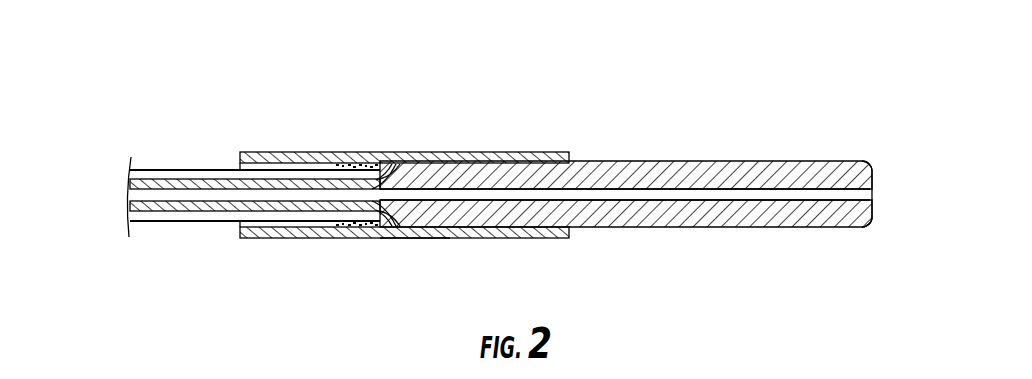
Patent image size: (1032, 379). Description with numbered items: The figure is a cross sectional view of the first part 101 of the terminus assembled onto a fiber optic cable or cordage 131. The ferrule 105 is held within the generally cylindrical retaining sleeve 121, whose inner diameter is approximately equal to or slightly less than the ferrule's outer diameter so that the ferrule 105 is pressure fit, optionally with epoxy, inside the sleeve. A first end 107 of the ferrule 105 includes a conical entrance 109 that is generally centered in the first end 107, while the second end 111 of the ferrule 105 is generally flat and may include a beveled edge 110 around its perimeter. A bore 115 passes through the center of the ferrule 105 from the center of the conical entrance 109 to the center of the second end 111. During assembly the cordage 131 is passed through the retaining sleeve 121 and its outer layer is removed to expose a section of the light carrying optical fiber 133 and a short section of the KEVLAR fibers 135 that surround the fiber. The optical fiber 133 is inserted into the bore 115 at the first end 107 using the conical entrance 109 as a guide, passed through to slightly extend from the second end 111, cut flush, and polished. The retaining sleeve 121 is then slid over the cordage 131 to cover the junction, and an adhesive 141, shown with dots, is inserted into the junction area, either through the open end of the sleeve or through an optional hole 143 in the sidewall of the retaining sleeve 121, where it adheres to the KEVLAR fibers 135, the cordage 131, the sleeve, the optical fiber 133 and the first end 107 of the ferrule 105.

The first part of the terminus 101 is at (610, 94).
The ferrule 105 is at (678, 227).
The first end of the ferrule 107 is at (414, 259).
The conical entrance 109 is at (380, 238).
The beveled edge 110 is at (867, 160).
The second end of the ferrule 111 is at (875, 238).
The bore 115 is at (640, 201).
The retaining sleeve 121 is at (455, 152).
The fiber optic cable or cordage 131 is at (168, 166).
The light carrying optical fiber 133 is at (128, 202).
The KEVLAR fibers 135 is at (349, 165).
The adhesive 141 is at (348, 224).
The hole 143 is at (388, 166).